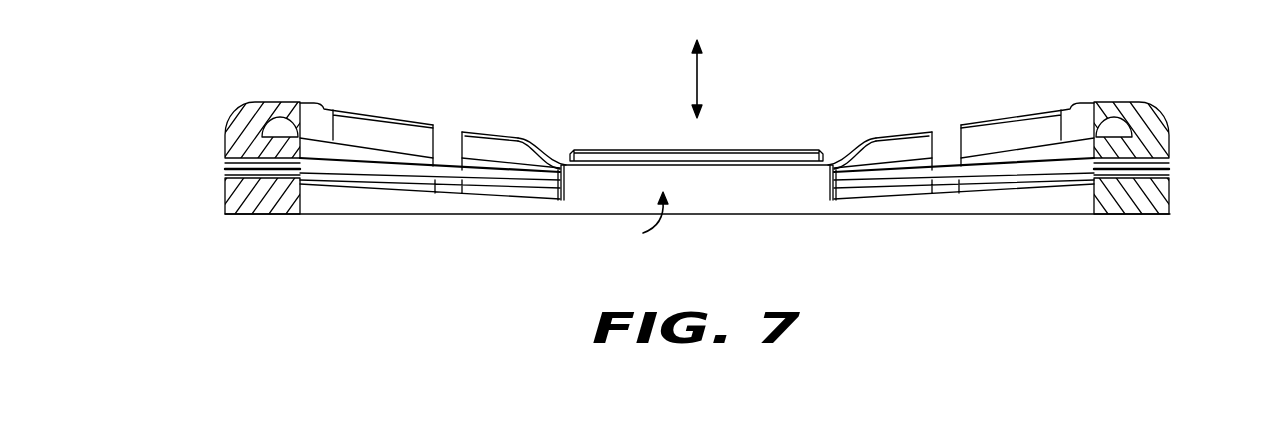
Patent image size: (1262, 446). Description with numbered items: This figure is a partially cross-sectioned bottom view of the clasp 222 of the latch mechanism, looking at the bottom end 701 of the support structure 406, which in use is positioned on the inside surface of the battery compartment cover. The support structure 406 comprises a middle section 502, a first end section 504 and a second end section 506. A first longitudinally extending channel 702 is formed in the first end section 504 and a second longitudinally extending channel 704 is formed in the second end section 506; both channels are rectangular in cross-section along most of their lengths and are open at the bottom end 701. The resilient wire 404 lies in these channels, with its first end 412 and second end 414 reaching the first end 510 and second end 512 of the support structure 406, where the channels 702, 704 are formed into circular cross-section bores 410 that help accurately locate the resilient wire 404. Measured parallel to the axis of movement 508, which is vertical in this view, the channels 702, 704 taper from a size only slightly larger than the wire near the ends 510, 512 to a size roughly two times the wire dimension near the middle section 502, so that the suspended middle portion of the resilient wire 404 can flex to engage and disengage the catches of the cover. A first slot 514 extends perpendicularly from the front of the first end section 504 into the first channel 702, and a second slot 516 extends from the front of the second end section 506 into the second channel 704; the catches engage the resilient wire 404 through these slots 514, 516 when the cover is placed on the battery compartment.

The clasp 222 is at (897, 37).
The circular cross-section bores 410 is at (225, 158).
The first end 412 is at (225, 165).
The second end 414 is at (1170, 161).
The first end 510 is at (226, 190).
The second end 512 is at (1172, 192).
The first end section 504 is at (327, 200).
The resilient wire 404 is at (1002, 175).
The first longitudinally extending channel 702 is at (526, 195).
The second longitudinally extending channel 704 is at (866, 195).
The middle section 502 is at (762, 195).
The bottom end 701 is at (632, 220).
The support structure 406 is at (773, 158).
The axis of movement 508 is at (695, 78).
The first slot 514 is at (451, 140).
The second slot 516 is at (943, 140).
The second end section 506 is at (1036, 125).